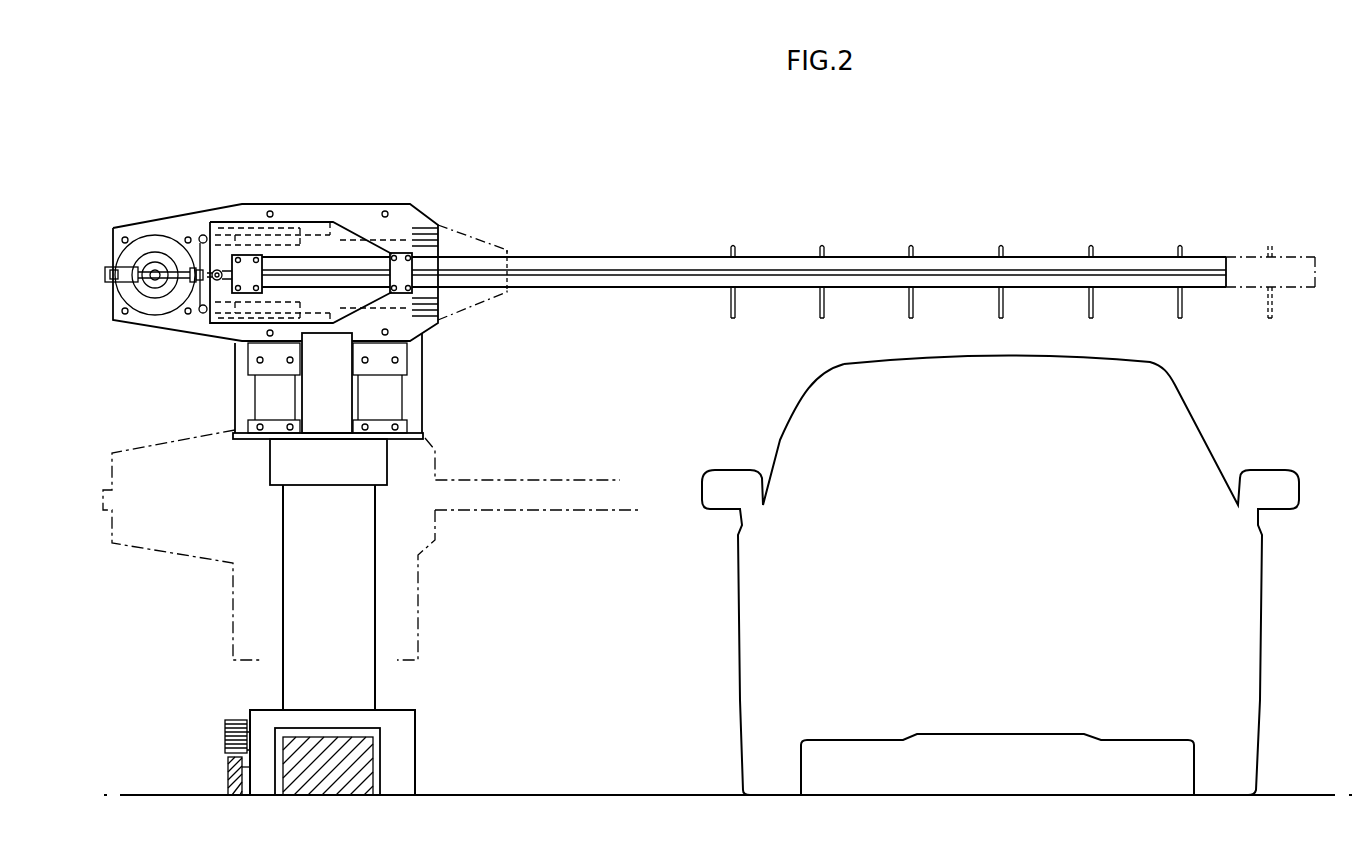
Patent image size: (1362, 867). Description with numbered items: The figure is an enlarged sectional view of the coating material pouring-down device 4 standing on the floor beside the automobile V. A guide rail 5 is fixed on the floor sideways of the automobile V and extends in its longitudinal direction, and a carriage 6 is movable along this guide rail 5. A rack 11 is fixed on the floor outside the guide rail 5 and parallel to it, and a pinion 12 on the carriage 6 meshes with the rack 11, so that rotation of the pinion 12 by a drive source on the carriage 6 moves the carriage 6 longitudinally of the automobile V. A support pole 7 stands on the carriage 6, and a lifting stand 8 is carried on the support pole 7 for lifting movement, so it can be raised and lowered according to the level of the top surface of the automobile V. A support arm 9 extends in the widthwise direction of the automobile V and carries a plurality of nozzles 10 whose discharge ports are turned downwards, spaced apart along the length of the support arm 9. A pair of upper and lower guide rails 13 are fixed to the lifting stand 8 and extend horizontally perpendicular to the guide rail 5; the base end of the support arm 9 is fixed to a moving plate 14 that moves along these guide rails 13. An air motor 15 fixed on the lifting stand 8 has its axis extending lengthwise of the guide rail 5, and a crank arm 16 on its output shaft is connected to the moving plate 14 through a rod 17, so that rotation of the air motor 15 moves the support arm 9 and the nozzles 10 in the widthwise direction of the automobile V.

The coating material pouring-down device 4 is at (388, 681).
The guide rail 5 is at (355, 757).
The carriage 6 is at (268, 718).
The support pole 7 is at (355, 593).
The lifting stand 8 is at (413, 393).
The support arm 9 is at (855, 257).
The nozzles 10 is at (911, 307).
The rack 11 is at (228, 768).
The pinion 12 is at (225, 735).
The guide rails 13 is at (400, 240).
The moving plate 14 is at (282, 225).
The air motor 15 is at (160, 252).
The crank arm 16 is at (133, 280).
The rod 17 is at (193, 262).
The automobile V is at (1211, 430).